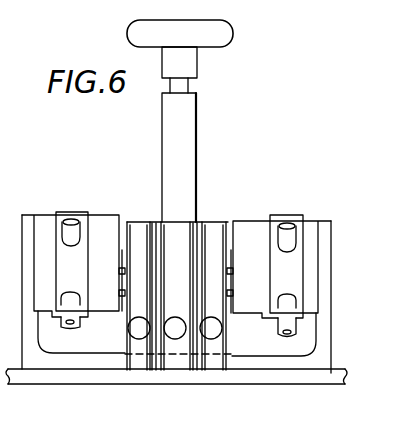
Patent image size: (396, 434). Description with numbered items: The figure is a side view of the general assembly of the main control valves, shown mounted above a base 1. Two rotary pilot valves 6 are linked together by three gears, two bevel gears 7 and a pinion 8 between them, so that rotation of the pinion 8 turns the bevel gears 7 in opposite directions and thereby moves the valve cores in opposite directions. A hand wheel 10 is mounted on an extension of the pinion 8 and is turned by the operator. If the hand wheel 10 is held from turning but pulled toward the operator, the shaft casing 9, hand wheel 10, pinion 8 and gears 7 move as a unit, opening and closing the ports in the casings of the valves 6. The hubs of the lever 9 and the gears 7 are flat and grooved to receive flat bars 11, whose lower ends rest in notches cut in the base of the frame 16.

The base plate 1 is at (349, 384).
The rotary pilot valve 6 is at (57, 212).
The bevel gear 7 is at (138, 222).
The pinion 8 is at (189, 86).
The shaft casing 9 is at (196, 155).
The hand wheel 10 is at (233, 34).
The flat bar 11 is at (139, 372).
The frame 16 is at (332, 335).